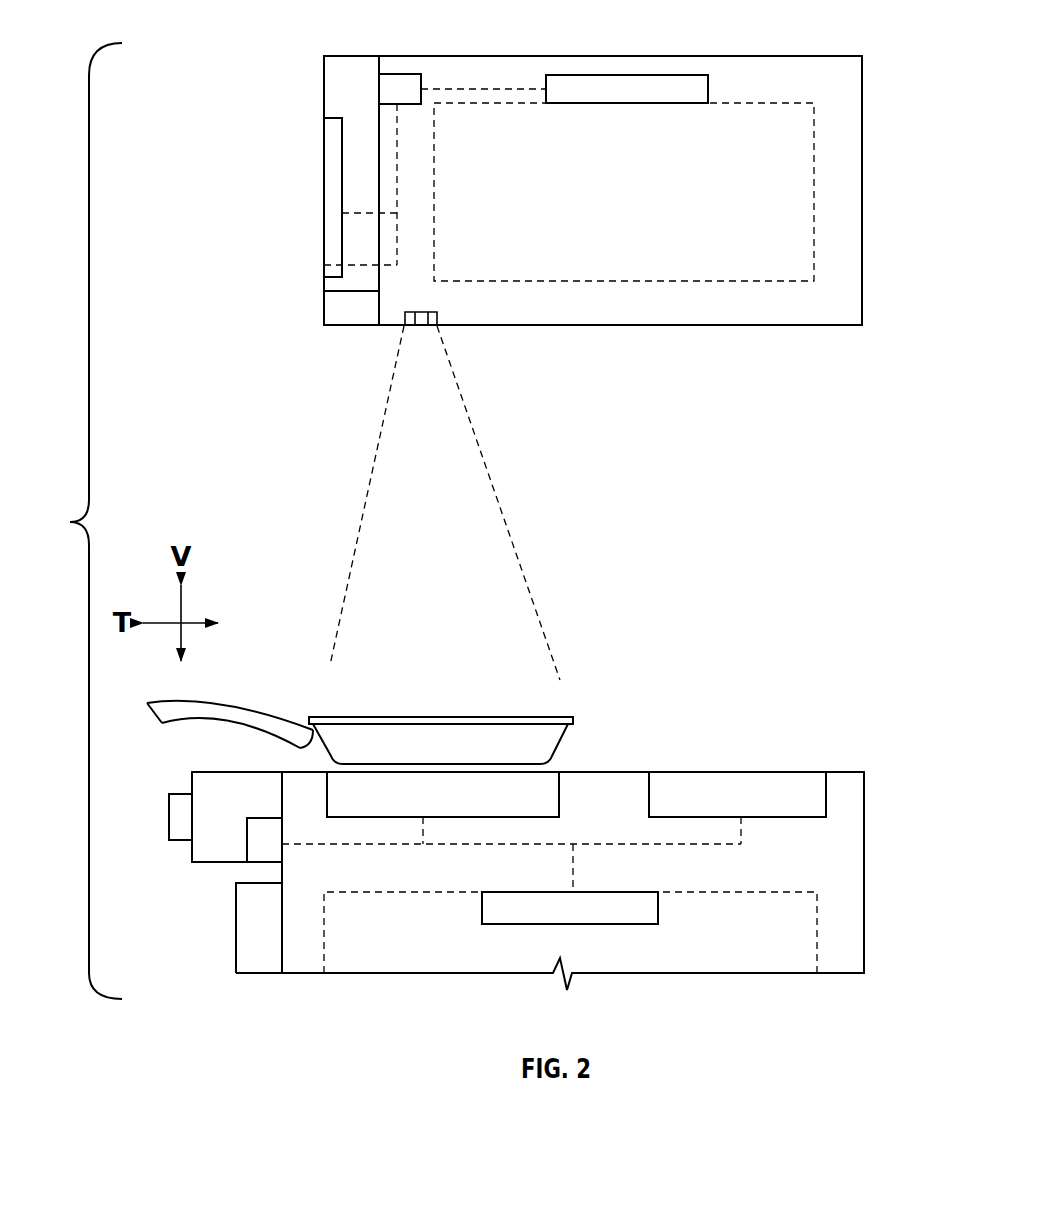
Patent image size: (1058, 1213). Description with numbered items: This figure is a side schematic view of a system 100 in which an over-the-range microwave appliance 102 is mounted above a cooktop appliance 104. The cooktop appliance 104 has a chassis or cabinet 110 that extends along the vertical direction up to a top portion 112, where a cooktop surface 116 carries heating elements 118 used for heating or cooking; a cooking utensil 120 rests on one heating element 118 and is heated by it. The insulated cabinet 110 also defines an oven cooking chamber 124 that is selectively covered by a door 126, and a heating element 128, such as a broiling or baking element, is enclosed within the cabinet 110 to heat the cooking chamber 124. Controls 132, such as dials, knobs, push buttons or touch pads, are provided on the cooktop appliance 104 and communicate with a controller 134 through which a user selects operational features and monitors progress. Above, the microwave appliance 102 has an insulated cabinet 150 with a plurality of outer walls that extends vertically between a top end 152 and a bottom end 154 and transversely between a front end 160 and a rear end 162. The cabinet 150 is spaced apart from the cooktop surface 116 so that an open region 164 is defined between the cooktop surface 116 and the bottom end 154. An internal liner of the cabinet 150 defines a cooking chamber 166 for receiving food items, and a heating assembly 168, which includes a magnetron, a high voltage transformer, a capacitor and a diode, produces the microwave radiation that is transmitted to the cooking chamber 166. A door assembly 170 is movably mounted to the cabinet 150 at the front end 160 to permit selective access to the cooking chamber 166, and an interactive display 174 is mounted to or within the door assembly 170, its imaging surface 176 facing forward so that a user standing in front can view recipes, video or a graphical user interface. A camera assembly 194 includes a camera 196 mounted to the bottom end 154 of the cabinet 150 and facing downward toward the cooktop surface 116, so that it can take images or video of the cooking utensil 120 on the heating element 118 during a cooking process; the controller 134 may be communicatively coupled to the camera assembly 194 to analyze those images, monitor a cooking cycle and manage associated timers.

The system 100 is at (74, 521).
The microwave appliance 102 is at (868, 151).
The cooktop appliance 104 is at (873, 867).
The cabinet 110 is at (850, 947).
The top portion 112 is at (843, 768).
The cooktop surface 116 is at (601, 769).
The heating element 118 is at (750, 782).
The cooking utensil 120 is at (416, 761).
The cooking chamber 124 is at (723, 944).
The door 126 is at (252, 928).
The heating element 128 is at (492, 912).
The controls 132 is at (180, 825).
The controller 134 is at (406, 86).
The cabinet 150 is at (814, 318).
The top end 152 is at (746, 52).
The bottom end 154 is at (771, 330).
The front end 160 is at (378, 311).
The rear end 162 is at (868, 300).
The open region 164 is at (520, 536).
The cooking chamber 166 is at (608, 204).
The heating assembly 168 is at (634, 88).
The door assembly 170 is at (336, 76).
The interactive display 174 is at (335, 187).
The imaging surface 176 is at (323, 250).
The camera assembly 194 is at (443, 311).
The camera 196 is at (419, 317).